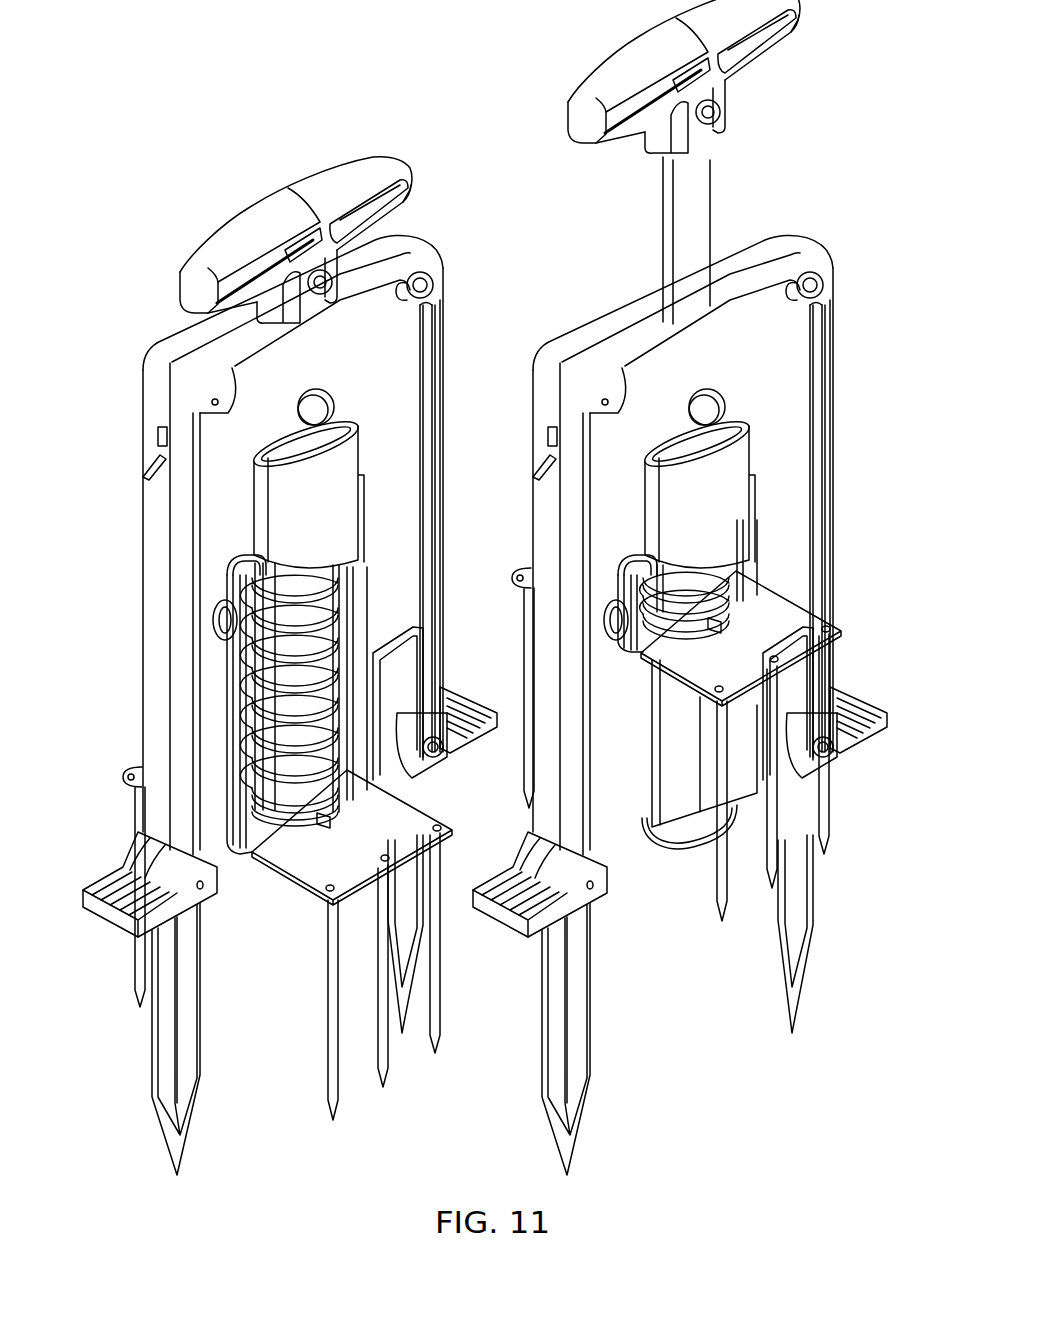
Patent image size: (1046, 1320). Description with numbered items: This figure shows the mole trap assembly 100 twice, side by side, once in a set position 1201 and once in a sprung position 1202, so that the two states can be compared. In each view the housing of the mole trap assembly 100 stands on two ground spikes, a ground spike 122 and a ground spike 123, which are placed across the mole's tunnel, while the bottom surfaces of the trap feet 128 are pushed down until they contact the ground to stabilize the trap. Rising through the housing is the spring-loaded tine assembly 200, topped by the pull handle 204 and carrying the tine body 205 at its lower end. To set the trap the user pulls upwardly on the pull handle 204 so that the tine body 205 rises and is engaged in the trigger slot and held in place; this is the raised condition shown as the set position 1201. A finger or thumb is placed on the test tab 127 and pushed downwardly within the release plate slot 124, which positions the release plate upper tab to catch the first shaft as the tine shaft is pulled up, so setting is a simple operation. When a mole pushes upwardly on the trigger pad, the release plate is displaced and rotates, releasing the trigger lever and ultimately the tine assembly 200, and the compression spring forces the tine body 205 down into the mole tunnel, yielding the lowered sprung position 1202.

The mole trap assembly 100 is at (162, 322).
The set position 1201 is at (839, 248).
The sprung position 1202 is at (430, 230).
The pull handle 204 is at (331, 178).
The tine assembly 200 is at (213, 678).
The tine body 205 is at (288, 917).
The ground spike 122 is at (420, 965).
The ground spike 123 is at (168, 1058).
The release plate slot 124 is at (148, 436).
The test tab 127 is at (143, 470).
The trap foot 128 is at (468, 746).